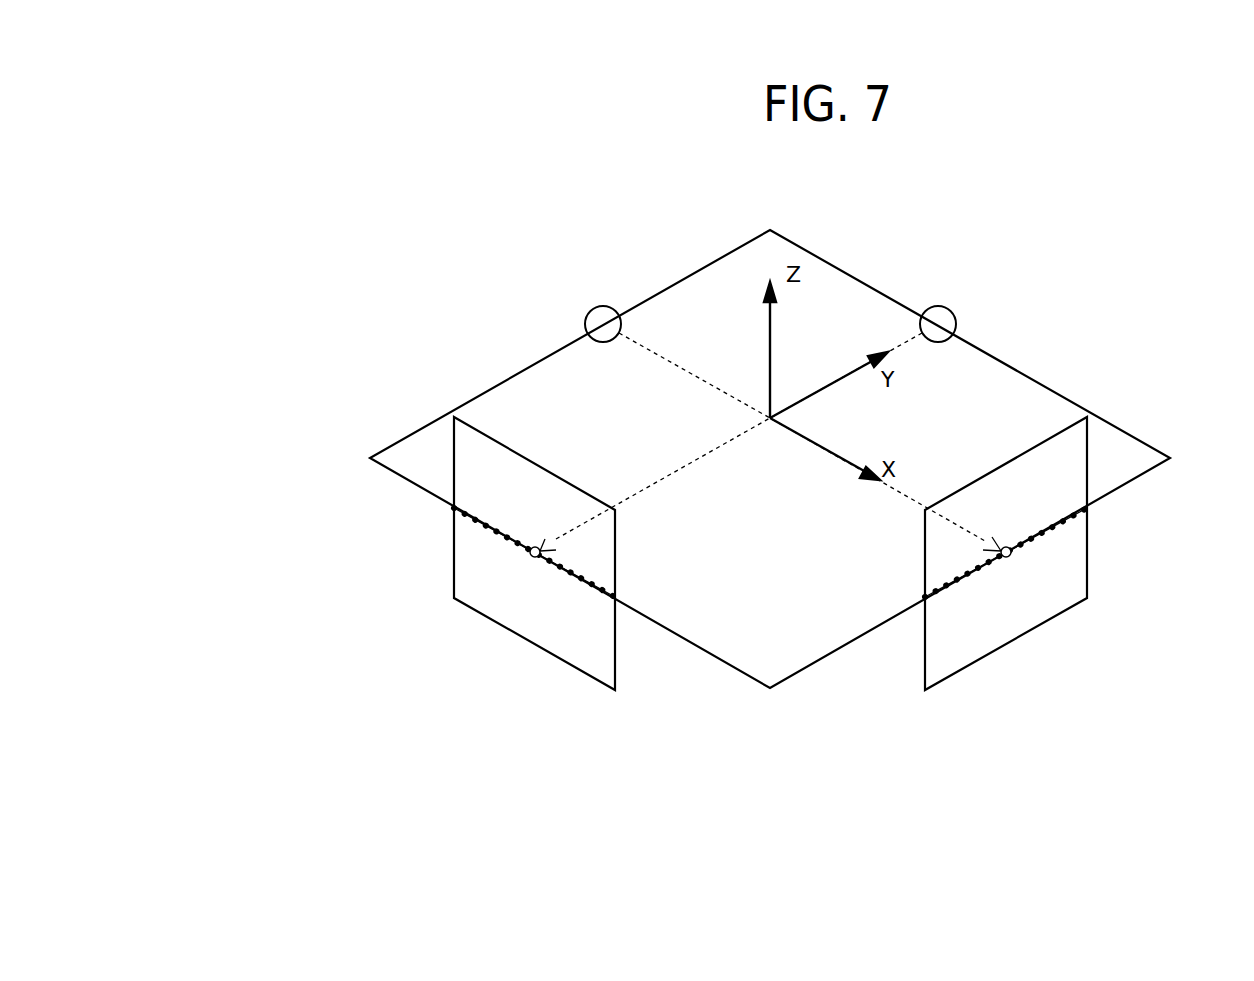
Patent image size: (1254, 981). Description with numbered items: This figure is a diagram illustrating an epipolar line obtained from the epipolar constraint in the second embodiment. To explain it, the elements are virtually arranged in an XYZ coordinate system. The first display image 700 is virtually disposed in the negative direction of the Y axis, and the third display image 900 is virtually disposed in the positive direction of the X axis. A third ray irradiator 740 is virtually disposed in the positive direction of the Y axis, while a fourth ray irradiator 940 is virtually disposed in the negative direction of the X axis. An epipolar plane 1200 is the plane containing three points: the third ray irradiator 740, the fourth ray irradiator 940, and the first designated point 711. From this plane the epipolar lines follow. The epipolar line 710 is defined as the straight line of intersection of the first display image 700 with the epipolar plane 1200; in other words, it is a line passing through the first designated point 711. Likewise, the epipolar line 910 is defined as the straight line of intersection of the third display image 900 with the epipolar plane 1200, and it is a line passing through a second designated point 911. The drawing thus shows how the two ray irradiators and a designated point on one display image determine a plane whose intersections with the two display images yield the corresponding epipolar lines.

The epipolar plane 1200 is at (988, 388).
The fourth ray irradiator 940 is at (611, 306).
The third ray irradiator 740 is at (938, 306).
The first display image 700 is at (530, 643).
The third display image 900 is at (1030, 632).
The epipolar line 710 is at (515, 540).
The first designated point 711 is at (532, 558).
The epipolar line 910 is at (975, 577).
The second designated point 911 is at (1012, 557).